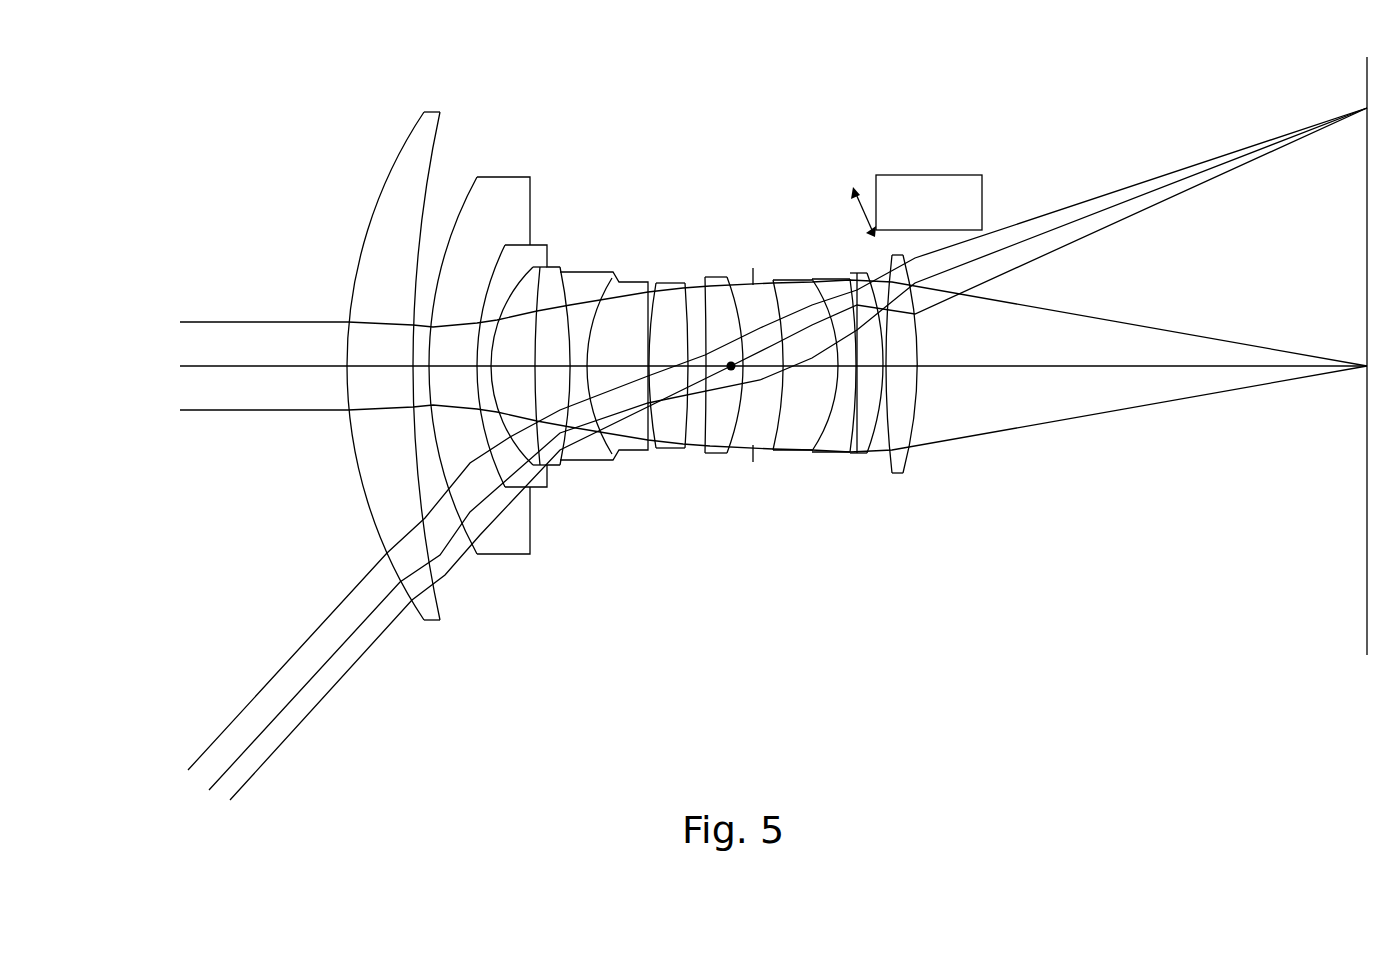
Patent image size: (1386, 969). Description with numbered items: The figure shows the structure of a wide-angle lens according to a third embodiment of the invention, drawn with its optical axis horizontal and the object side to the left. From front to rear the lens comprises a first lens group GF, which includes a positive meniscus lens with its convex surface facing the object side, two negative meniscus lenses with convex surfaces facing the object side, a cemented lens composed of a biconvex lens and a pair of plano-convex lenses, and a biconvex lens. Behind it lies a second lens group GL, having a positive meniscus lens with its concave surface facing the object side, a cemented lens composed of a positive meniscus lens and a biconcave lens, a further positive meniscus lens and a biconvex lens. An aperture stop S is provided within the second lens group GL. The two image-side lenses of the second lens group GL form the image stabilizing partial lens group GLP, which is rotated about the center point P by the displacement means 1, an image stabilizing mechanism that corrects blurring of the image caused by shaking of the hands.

The first lens group GF is at (545, 330).
The second lens group GL is at (814, 269).
The partial lens group GLP is at (890, 296).
The displacement means 1 is at (982, 193).
The center point P is at (725, 346).
The aperture stop S is at (753, 381).